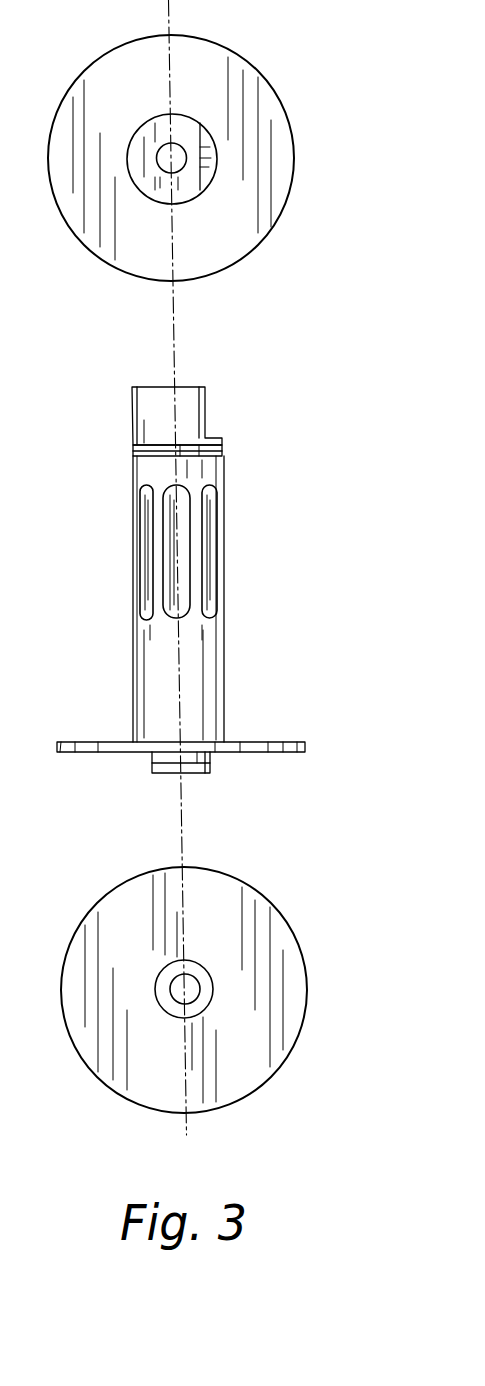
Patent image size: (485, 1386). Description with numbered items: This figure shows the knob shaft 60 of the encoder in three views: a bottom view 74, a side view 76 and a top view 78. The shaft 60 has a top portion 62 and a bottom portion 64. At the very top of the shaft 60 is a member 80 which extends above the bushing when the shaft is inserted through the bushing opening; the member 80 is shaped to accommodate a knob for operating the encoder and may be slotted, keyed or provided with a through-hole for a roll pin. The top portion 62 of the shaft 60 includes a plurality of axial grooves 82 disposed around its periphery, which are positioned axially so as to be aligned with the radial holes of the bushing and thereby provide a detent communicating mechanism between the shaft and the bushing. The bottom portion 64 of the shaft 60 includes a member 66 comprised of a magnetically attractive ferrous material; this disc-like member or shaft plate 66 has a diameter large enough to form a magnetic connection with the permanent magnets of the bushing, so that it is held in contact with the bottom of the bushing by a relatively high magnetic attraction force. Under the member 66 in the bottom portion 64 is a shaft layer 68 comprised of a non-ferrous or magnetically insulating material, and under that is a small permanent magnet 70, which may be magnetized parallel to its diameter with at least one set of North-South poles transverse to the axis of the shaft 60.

The knob shaft 60 is at (225, 652).
The top portion 62 is at (160, 645).
The bottom portion 64 is at (202, 798).
The member 66 is at (190, 569).
The shaft layer 68 is at (152, 755).
The small permanent magnet 70 is at (155, 775).
The bottom view 74 is at (298, 923).
The side view 76 is at (202, 557).
The top view 78 is at (287, 93).
The member 80 is at (205, 413).
The axial grooves 82 is at (142, 567).